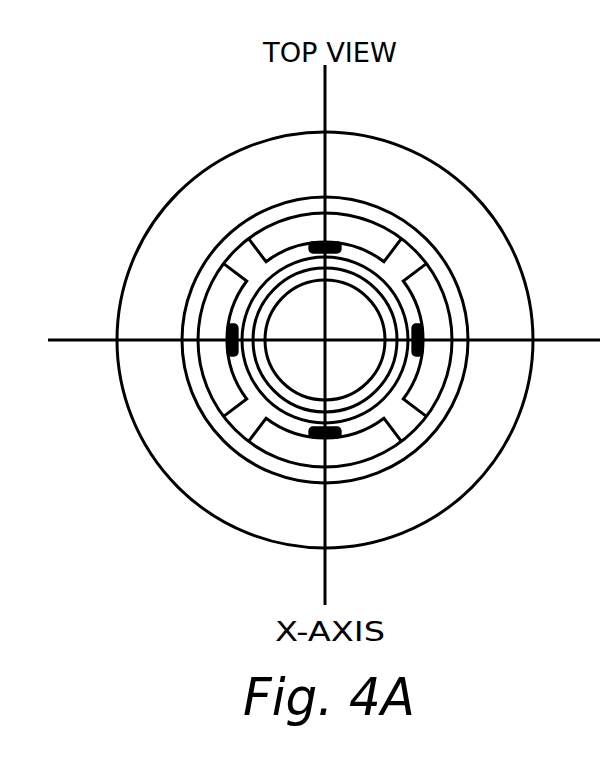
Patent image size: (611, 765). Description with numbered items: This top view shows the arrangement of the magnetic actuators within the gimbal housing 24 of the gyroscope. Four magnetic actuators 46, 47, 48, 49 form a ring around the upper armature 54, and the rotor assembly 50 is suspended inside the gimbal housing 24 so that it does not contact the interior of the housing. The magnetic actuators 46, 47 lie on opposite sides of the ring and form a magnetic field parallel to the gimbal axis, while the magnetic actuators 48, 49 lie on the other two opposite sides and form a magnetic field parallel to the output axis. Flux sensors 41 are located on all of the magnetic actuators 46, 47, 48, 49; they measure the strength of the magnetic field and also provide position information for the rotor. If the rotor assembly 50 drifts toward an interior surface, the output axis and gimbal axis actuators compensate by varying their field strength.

The gimbal housing 24 is at (458, 181).
The flux sensors 41 is at (314, 243).
The magnetic actuator 46 is at (187, 302).
The magnetic actuator 47 is at (456, 298).
The magnetic actuator 48 is at (352, 467).
The magnetic actuator 49 is at (352, 209).
The rotor assembly 50 is at (237, 412).
The upper armature 54 is at (397, 420).